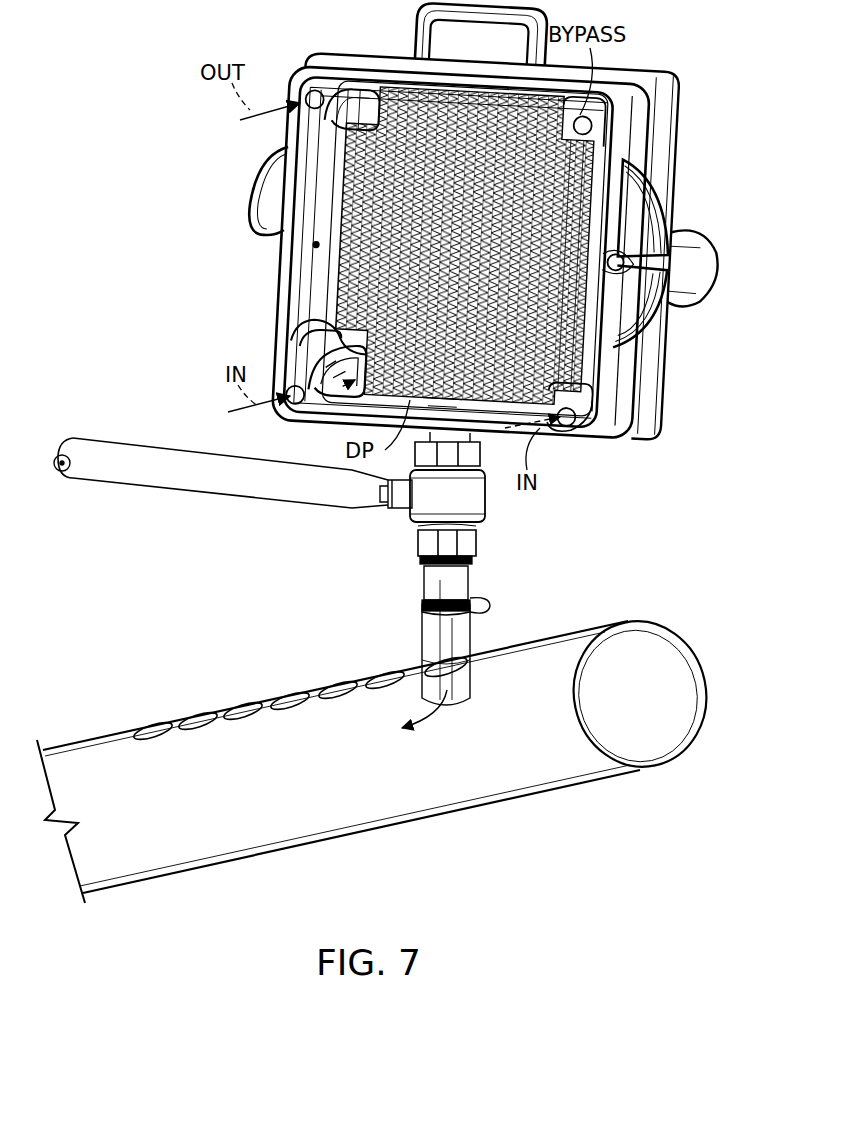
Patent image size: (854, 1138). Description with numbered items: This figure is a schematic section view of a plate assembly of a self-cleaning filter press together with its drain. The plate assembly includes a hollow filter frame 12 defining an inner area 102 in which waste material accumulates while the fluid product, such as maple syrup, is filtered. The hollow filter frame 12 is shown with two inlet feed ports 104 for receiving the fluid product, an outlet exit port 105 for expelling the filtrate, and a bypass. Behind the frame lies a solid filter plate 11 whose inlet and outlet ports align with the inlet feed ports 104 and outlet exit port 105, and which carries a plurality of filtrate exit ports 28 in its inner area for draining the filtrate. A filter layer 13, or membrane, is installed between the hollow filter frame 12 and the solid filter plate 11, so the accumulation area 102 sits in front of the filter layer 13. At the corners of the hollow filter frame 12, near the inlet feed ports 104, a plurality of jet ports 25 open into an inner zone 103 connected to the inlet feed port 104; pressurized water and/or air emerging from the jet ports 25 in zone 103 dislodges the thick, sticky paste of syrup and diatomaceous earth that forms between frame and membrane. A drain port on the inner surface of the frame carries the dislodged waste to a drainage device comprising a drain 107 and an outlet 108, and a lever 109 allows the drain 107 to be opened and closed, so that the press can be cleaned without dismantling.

The solid filter plate 11 is at (662, 163).
The hollow filter frame 12 is at (603, 435).
The filter layer 13 is at (633, 357).
The jet ports 25 is at (310, 352).
The filtrate exit ports 28 is at (375, 100).
The inner area 102 is at (313, 247).
The inner zone 103 is at (593, 145).
The inlet feed port 104 is at (298, 408).
The outlet exit port 105 is at (310, 90).
The drain 107 is at (486, 542).
The outlet 108 is at (572, 620).
The lever 109 is at (256, 510).